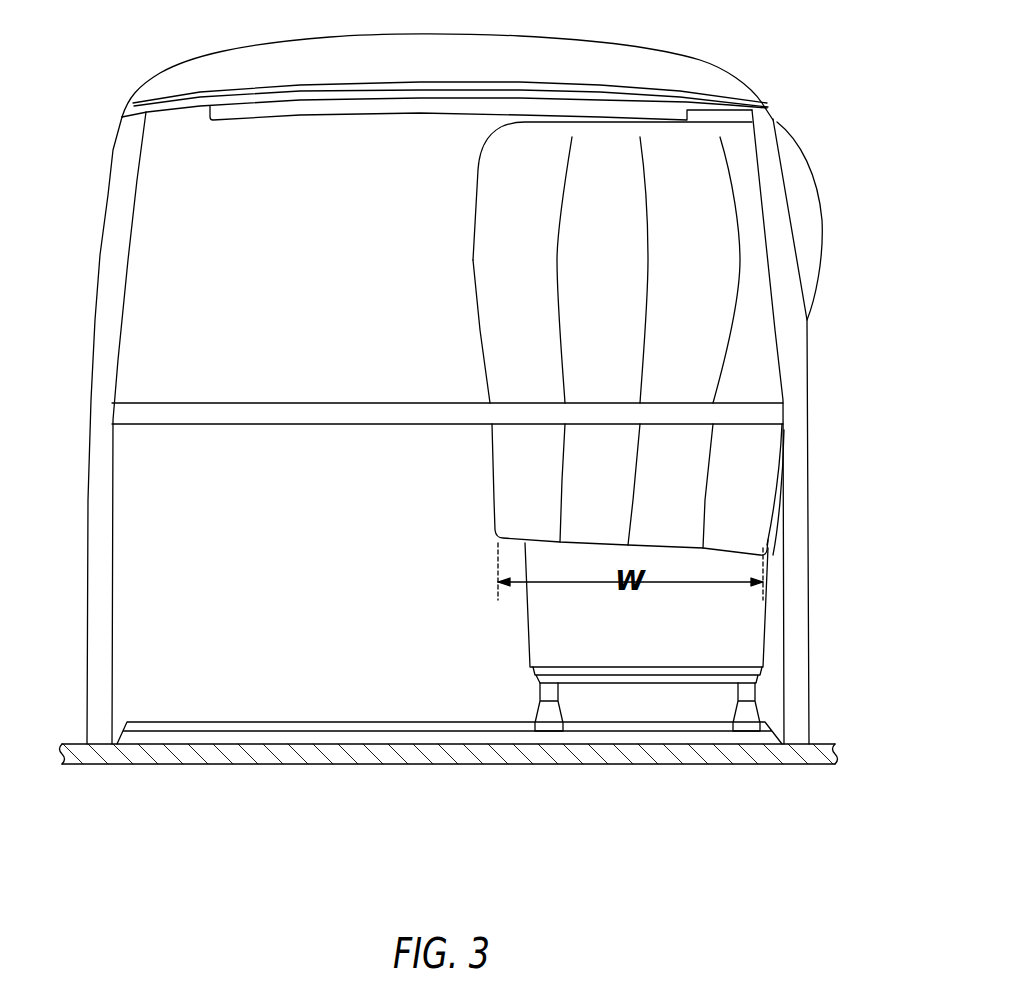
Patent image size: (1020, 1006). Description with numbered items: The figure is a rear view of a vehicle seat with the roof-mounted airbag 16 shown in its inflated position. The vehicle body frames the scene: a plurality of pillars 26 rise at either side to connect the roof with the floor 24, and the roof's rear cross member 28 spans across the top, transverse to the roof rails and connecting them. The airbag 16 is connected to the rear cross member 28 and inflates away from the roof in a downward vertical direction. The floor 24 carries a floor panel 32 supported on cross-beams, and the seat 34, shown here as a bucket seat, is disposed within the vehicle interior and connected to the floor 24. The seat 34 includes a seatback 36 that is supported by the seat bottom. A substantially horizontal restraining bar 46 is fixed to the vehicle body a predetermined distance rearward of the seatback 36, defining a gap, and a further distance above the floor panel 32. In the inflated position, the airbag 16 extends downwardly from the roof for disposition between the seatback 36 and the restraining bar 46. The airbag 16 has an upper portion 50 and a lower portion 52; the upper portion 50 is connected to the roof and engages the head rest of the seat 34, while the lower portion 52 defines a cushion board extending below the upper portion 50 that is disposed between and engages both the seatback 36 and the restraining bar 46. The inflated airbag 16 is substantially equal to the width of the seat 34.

The airbag 16 is at (823, 210).
The floor 24 is at (422, 765).
The pillars 26 is at (102, 235).
The rear cross member 28 is at (310, 120).
The floor panel 32 is at (303, 722).
The seat 34 is at (525, 658).
The seatback 36 is at (522, 548).
The restraining bar 46 is at (265, 402).
The upper portion 50 is at (468, 122).
The lower portion 52 is at (468, 540).